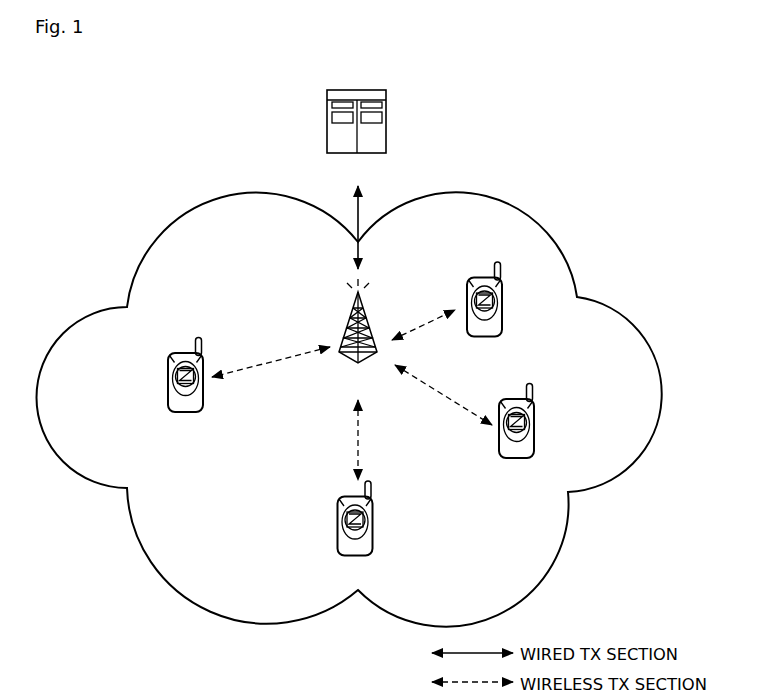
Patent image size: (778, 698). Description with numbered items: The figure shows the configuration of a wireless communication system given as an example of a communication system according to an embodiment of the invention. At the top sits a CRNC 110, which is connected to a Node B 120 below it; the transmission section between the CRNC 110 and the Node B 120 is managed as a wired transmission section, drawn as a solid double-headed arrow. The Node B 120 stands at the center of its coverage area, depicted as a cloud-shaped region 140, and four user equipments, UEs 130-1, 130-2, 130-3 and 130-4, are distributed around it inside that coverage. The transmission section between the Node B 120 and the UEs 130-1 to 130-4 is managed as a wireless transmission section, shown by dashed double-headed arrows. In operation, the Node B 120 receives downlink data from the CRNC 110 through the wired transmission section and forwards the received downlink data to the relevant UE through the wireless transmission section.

The CRNC 110 is at (353, 88).
The Node B 120 is at (352, 312).
The UE 130-1 is at (168, 380).
The UE 130-2 is at (375, 521).
The UE 130-3 is at (537, 422).
The UE 130-4 is at (503, 301).
The cell / wireless network coverage area 140 is at (453, 190).